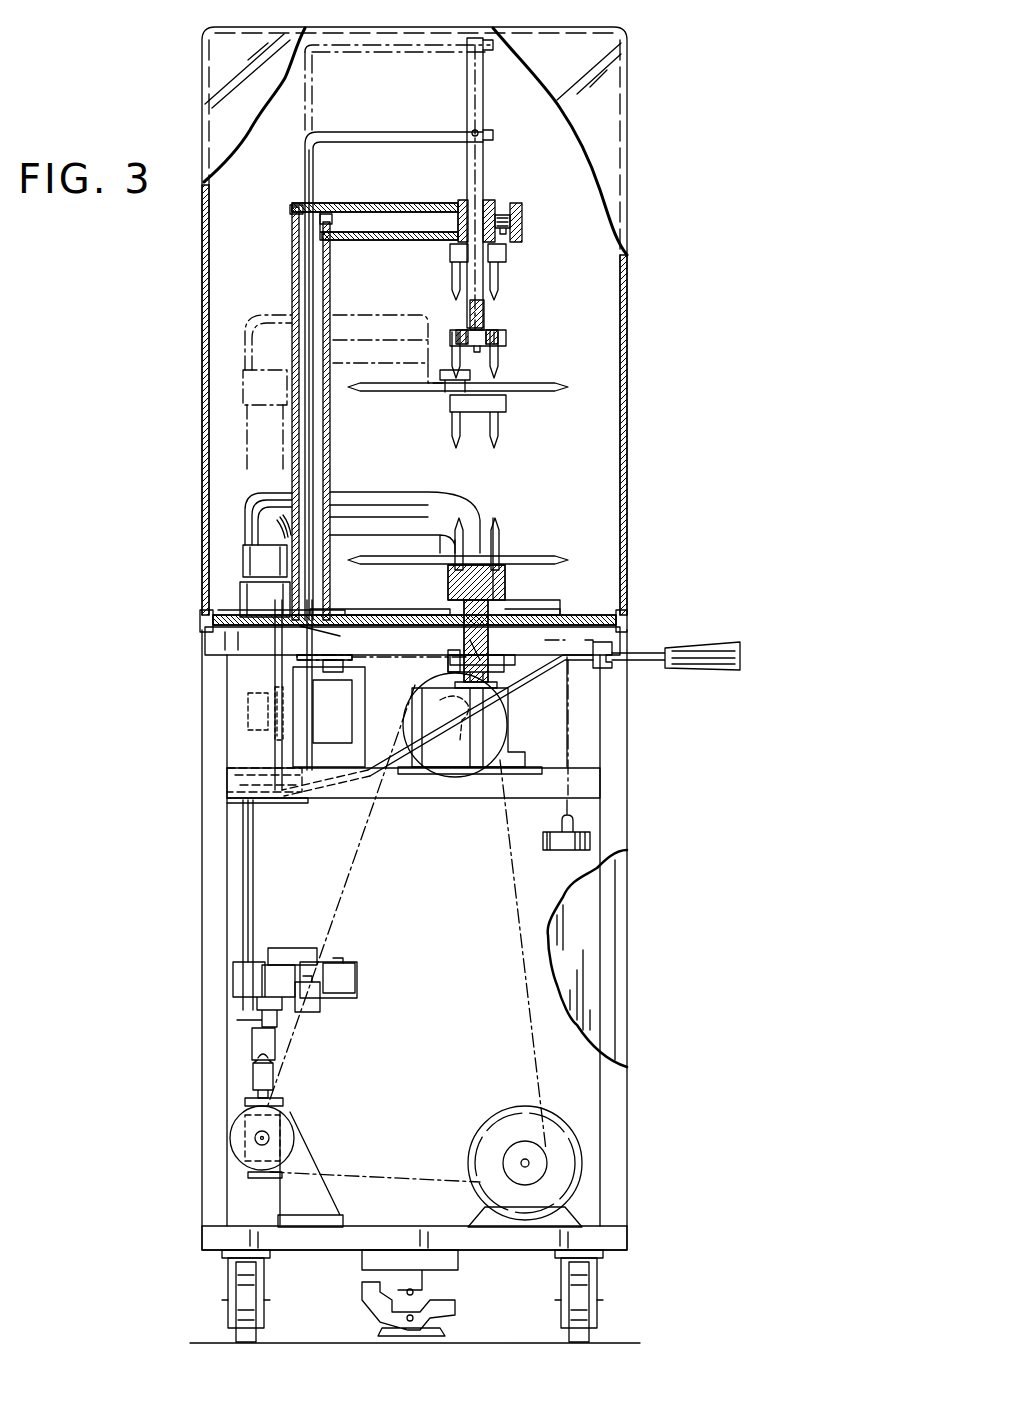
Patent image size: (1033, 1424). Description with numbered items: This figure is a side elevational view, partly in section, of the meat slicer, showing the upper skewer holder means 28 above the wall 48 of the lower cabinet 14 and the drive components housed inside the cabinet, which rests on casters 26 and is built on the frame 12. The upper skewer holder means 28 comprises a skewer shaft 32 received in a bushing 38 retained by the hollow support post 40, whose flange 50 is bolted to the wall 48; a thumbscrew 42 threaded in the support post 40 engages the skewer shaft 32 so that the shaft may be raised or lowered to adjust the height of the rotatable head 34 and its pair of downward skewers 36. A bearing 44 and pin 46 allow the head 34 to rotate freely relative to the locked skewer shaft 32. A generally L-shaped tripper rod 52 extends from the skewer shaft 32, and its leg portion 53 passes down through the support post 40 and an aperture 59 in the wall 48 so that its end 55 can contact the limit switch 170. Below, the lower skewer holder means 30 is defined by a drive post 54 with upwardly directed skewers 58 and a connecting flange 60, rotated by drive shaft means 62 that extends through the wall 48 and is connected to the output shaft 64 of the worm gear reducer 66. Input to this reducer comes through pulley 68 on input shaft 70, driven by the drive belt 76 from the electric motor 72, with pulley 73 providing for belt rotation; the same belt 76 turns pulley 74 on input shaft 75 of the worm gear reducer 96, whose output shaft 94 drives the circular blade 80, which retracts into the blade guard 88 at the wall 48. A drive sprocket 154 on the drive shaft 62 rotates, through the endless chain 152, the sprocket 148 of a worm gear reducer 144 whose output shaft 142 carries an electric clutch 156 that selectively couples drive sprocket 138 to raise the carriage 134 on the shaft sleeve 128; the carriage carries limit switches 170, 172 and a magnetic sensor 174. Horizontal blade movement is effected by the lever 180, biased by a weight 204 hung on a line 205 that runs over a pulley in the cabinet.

The frame 12 is at (475, 825).
The lower cabinet 14 is at (530, 933).
The casters 26 is at (585, 1295).
The upper skewer holder means 28 is at (500, 322).
The lower skewer holder means 30 is at (505, 530).
The skewer shaft 32 is at (475, 175).
The rotatable head 34 is at (502, 342).
The skewers 36 is at (500, 356).
The bushing 38 is at (458, 208).
The support post 40 is at (348, 210).
The thumbscrew 42 is at (522, 218).
The bearing 44 is at (470, 328).
The pin 46 is at (465, 378).
The wall 48 is at (235, 615).
The flange 50 is at (340, 610).
The tripper rod 52 is at (345, 135).
The leg portion 53 is at (315, 460).
The drive post 54 is at (468, 580).
The end 55 is at (310, 805).
The skewers 58 is at (496, 530).
The aperture 59 is at (337, 639).
The connecting flange 60 is at (510, 604).
The drive shaft means 62 is at (488, 660).
The output shaft 64 is at (495, 718).
The worm gear reducer 66 is at (505, 735).
The pulley 68 is at (440, 760).
The input shaft 70 is at (458, 740).
The electric motor 72 is at (508, 1132).
The pulley 73 is at (530, 1140).
The pulley 74 is at (255, 1125).
The input shaft 75 is at (255, 1140).
The drive belt 76 is at (508, 893).
The circular blade 80 is at (500, 552).
The blade guard 88 is at (575, 615).
The output shaft 94 is at (258, 1090).
The worm gear reducer 96 is at (272, 1105).
The shaft sleeve 128 is at (268, 870).
The carriage 134 is at (325, 960).
The drive sprocket 138 is at (280, 720).
The output shaft 142 is at (272, 725).
The worm gear reducer 144 is at (322, 710).
The sprocket 148 is at (320, 668).
The endless chain 152 is at (400, 650).
The drive sprocket 154 is at (450, 663).
The electric clutch 156 is at (245, 706).
The limit switch 170 is at (312, 1002).
The limit switch 172 is at (345, 982).
The magnetic sensor 174 is at (292, 948).
The lever 180 is at (625, 658).
The weight 204 is at (590, 837).
The line 205 is at (568, 740).